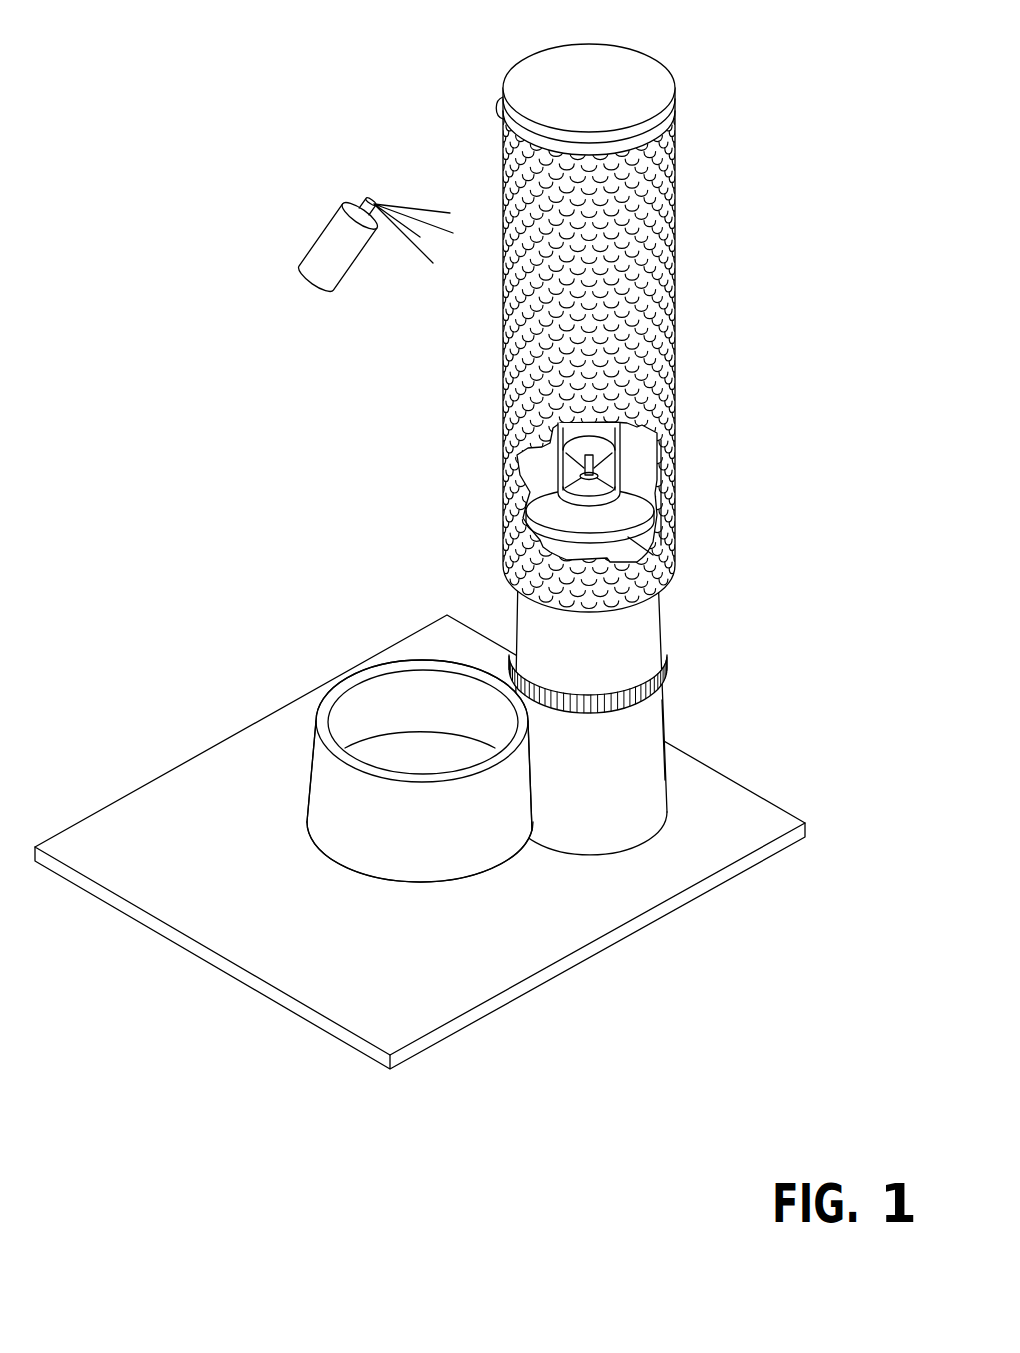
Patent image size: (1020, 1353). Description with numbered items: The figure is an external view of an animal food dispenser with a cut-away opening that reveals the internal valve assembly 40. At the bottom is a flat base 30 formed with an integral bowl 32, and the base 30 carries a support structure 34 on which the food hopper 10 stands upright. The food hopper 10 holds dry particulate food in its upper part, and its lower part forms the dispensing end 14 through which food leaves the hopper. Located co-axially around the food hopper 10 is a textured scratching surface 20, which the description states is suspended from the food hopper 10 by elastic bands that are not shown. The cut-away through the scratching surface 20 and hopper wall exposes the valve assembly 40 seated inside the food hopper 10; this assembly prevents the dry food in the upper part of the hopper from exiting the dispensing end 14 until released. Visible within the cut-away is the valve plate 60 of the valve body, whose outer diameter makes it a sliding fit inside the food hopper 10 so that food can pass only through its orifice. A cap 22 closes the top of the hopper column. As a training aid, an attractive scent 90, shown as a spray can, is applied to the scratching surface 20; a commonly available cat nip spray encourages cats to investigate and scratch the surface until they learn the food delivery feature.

The food hopper 10 is at (660, 608).
The dispensing end 14 is at (658, 645).
The scratching surface 20 is at (500, 388).
The cap 22 is at (573, 87).
The base 30 is at (577, 968).
The bowl 32 is at (338, 806).
The support structure 34 is at (630, 705).
The valve assembly 40 is at (557, 468).
The valve plate 60 is at (673, 553).
The attractive scent 90 is at (320, 240).